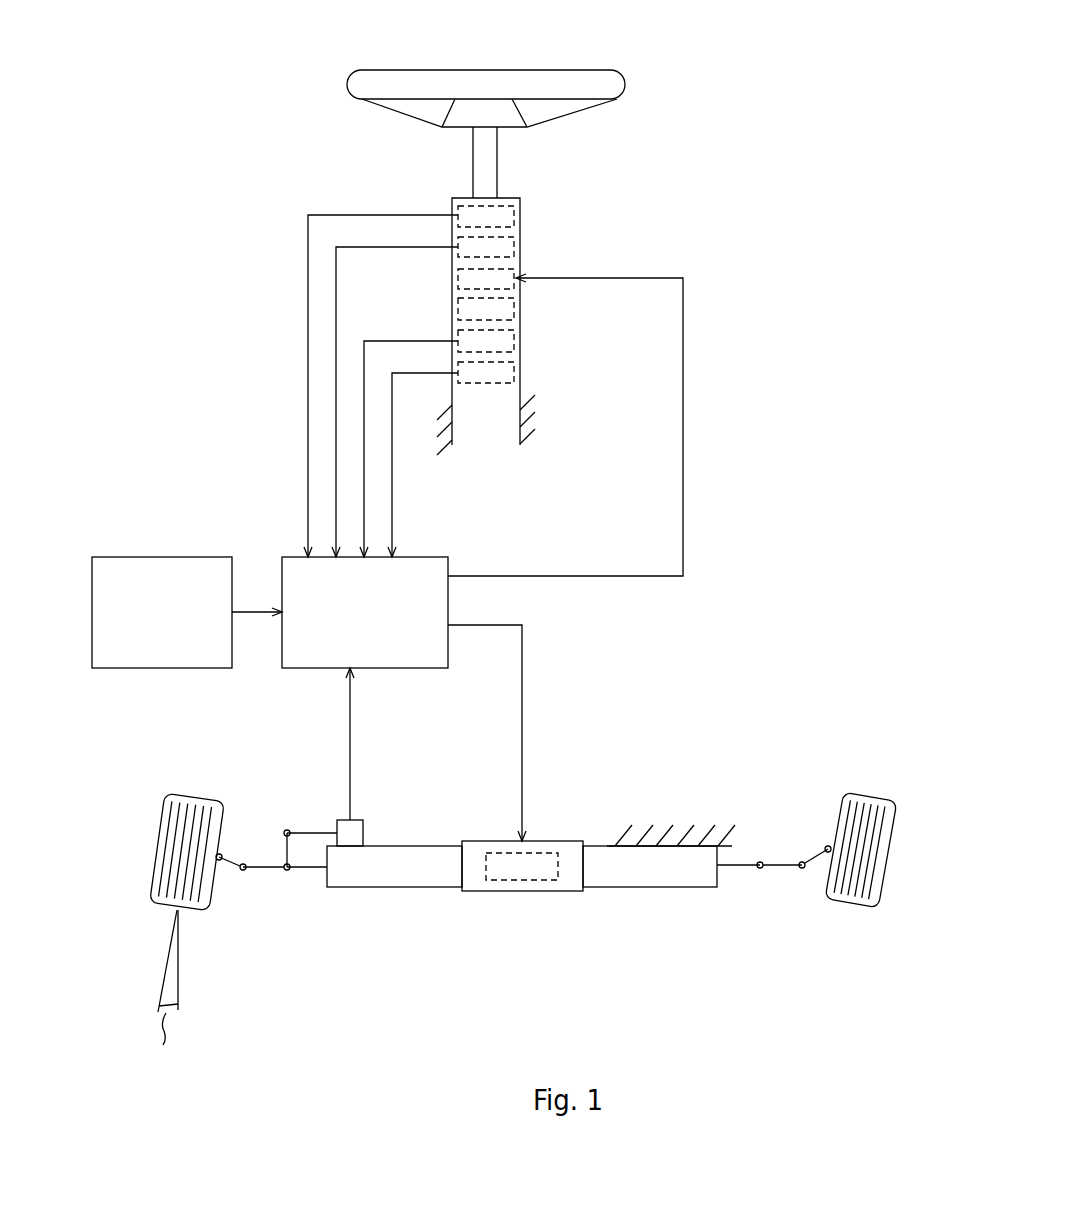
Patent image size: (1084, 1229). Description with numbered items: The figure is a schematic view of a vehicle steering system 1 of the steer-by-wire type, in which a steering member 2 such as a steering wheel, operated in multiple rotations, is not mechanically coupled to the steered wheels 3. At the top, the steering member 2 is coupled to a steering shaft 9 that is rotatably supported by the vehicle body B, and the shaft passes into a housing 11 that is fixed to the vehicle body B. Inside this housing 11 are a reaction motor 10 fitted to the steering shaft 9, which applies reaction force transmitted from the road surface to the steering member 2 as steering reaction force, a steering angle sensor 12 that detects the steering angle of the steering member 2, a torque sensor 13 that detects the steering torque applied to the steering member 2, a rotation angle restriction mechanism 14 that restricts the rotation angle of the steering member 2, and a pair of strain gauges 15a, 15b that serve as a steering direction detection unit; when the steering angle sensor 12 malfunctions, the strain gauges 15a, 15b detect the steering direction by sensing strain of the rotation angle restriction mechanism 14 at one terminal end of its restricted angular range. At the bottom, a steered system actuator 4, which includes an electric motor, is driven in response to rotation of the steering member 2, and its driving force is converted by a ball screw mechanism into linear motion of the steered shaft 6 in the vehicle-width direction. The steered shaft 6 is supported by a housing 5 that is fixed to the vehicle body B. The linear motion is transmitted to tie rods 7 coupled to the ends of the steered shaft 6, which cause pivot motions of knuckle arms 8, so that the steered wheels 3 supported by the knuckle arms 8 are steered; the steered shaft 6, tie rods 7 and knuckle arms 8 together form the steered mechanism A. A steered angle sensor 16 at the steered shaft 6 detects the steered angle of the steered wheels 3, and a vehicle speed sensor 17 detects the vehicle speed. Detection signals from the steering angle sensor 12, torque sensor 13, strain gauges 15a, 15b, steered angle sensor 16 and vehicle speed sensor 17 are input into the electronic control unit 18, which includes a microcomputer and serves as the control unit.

The vehicle steering system 1 is at (650, 188).
The steering member 2 is at (573, 70).
The steered wheels 3 is at (198, 908).
The steered system actuator 4 is at (522, 882).
The housing 5 is at (406, 888).
The steered shaft 6 is at (311, 870).
The tie rods 7 is at (264, 868).
The knuckle arms 8 is at (232, 857).
The steering shaft 9 is at (497, 160).
The reaction motor 10 is at (522, 285).
The housing 11 is at (460, 198).
The steering angle sensor 12 is at (520, 245).
The torque sensor 13 is at (520, 213).
The rotation angle restriction mechanism 14 is at (458, 305).
The strain gauge 15a is at (520, 340).
The strain gauge 15b is at (520, 373).
The steered angle sensor 16 is at (343, 820).
The vehicle speed sensor 17 is at (157, 557).
The electronic control unit 18 is at (430, 557).
The steered mechanism A is at (774, 818).
The vehicle body B is at (528, 421).